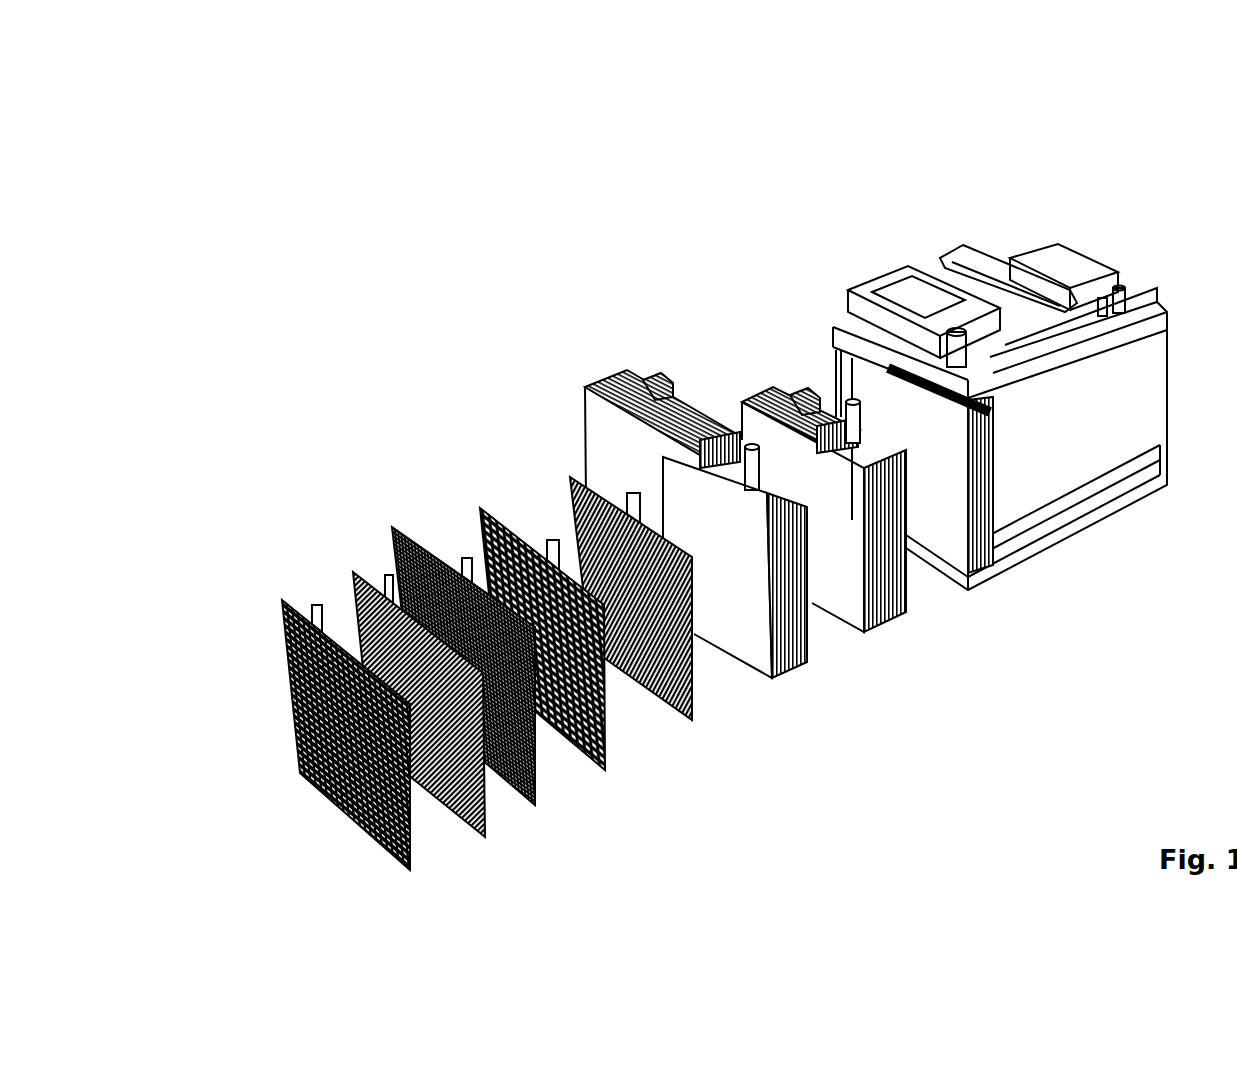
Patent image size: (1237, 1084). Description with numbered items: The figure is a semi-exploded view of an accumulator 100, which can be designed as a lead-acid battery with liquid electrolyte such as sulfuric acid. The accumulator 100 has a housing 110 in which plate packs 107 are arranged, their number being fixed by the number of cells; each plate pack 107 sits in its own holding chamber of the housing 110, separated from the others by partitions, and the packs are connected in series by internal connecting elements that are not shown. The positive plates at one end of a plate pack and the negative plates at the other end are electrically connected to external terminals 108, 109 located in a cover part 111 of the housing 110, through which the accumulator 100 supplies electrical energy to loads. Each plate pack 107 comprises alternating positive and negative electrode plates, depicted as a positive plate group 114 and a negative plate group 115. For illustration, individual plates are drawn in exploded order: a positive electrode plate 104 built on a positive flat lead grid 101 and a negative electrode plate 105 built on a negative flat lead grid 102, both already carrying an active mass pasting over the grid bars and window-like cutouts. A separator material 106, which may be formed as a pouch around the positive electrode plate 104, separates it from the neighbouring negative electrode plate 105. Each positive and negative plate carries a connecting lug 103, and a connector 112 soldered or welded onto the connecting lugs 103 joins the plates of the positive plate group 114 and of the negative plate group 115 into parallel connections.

The accumulator 100 is at (779, 199).
The positive flat lead grid 101 is at (293, 705).
The negative flat lead grid 102 is at (608, 727).
The connecting lug 103 is at (603, 478).
The positive electrode plate 104 is at (352, 601).
The negative electrode plate 105 is at (700, 698).
The separator material 106 is at (388, 552).
The plate pack 107 is at (752, 388).
The external terminal 108 is at (1117, 290).
The external terminal 109 is at (946, 328).
The housing 110 is at (1150, 380).
The cover part 111 is at (1071, 306).
The connector 112 is at (725, 418).
The positive plate group 114 is at (600, 415).
The negative plate group 115 is at (760, 663).